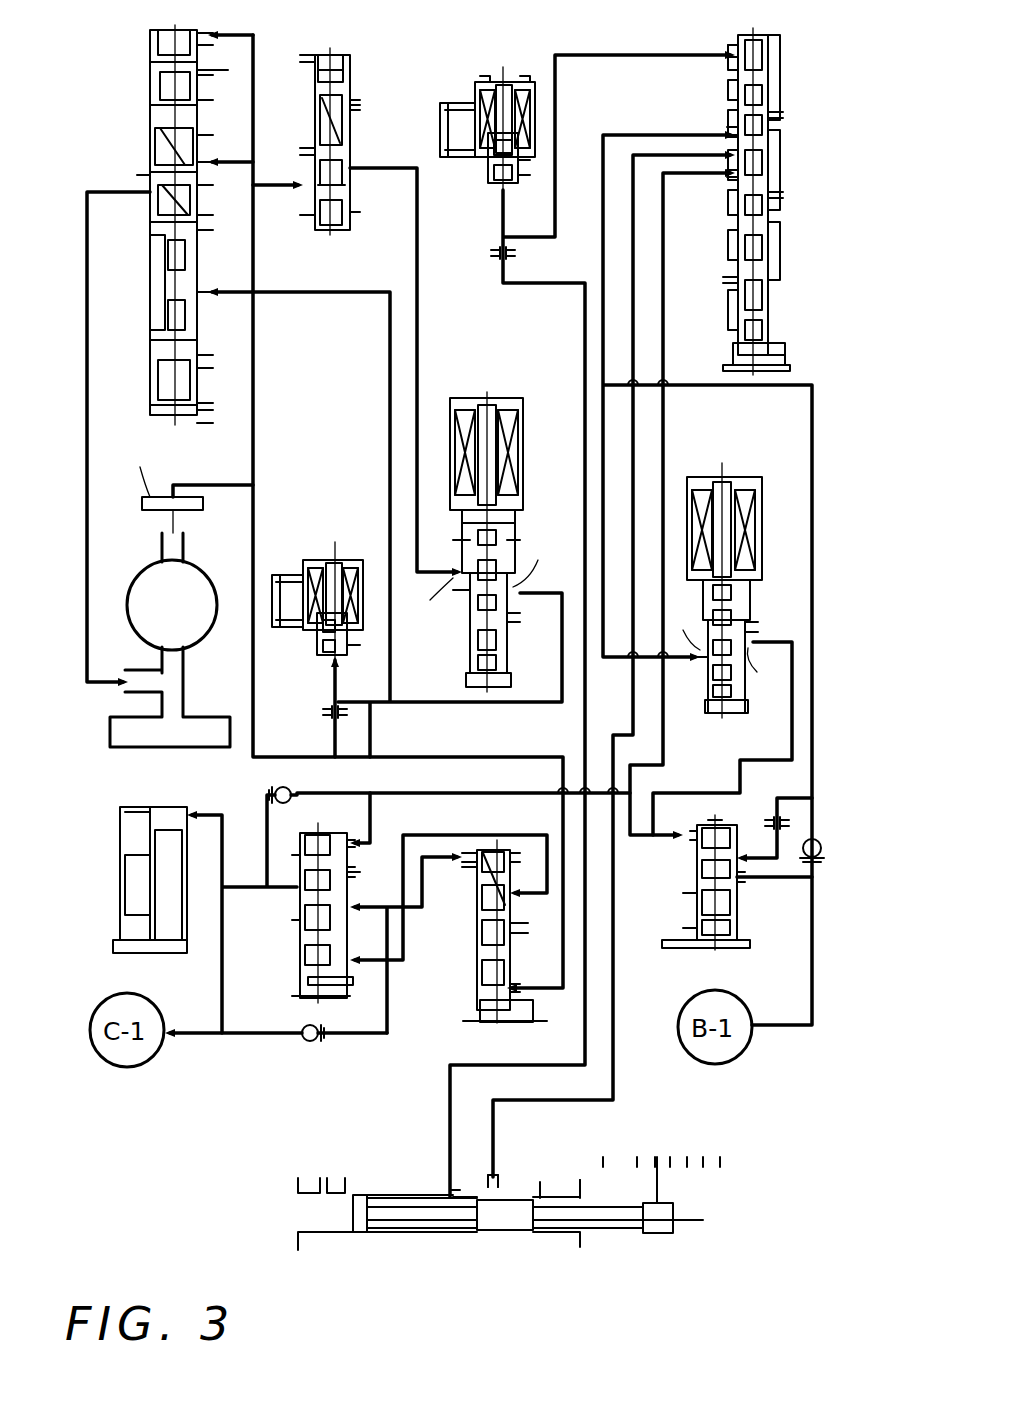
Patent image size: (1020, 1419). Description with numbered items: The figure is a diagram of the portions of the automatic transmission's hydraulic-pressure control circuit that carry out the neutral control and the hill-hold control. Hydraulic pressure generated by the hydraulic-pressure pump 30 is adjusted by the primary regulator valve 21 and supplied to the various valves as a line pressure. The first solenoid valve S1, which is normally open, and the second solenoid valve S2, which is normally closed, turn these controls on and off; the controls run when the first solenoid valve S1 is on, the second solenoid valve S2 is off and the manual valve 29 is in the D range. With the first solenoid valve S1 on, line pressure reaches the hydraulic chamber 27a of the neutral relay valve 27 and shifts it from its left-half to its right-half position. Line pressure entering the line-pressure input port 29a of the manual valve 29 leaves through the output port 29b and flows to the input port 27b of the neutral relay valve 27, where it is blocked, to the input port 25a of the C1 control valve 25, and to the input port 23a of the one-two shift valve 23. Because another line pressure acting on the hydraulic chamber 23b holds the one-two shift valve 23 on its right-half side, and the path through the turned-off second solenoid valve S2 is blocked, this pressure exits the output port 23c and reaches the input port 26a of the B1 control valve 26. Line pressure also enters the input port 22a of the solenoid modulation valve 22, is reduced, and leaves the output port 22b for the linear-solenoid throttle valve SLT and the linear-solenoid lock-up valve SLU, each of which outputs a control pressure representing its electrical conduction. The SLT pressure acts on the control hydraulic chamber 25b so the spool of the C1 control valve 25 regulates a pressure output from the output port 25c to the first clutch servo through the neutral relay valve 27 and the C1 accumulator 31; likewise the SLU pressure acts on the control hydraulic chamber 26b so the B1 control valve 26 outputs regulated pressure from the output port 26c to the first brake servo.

The primary regulator valve 21 is at (143, 98).
The solenoid modulation valve 22 is at (342, 136).
The input port 22a is at (303, 205).
The output port 22b is at (355, 162).
The 1–2 shift valve 23 is at (753, 187).
The input port 23a is at (718, 175).
The hydraulic chamber 23b is at (768, 42).
The output port 23c is at (725, 127).
The C1 control valve 25 is at (488, 931).
The input port 25a is at (515, 860).
The control hydraulic chamber 25b is at (535, 1005).
The output port 25c is at (466, 961).
The B1 control valve 26 is at (731, 874).
The input port 26a is at (728, 848).
The control hydraulic chamber 26b is at (697, 822).
The output port 26c is at (768, 896).
The neutral relay valve 27 is at (339, 900).
The hydraulic chamber 27a is at (333, 824).
The input port 27b is at (352, 864).
The manual valve 29 is at (518, 1157).
The line-pressure input port 29a is at (447, 1180).
The output port 29b is at (490, 1177).
The hydraulic-pressure pump 30 is at (197, 567).
The C1 accumulator 31 is at (113, 808).
The first solenoid valve S1 is at (343, 542).
The second solenoid valve S2 is at (507, 80).
The linear-solenoid throttle valve SLT is at (527, 500).
The linear-solenoid lock-up valve SLU is at (733, 470).